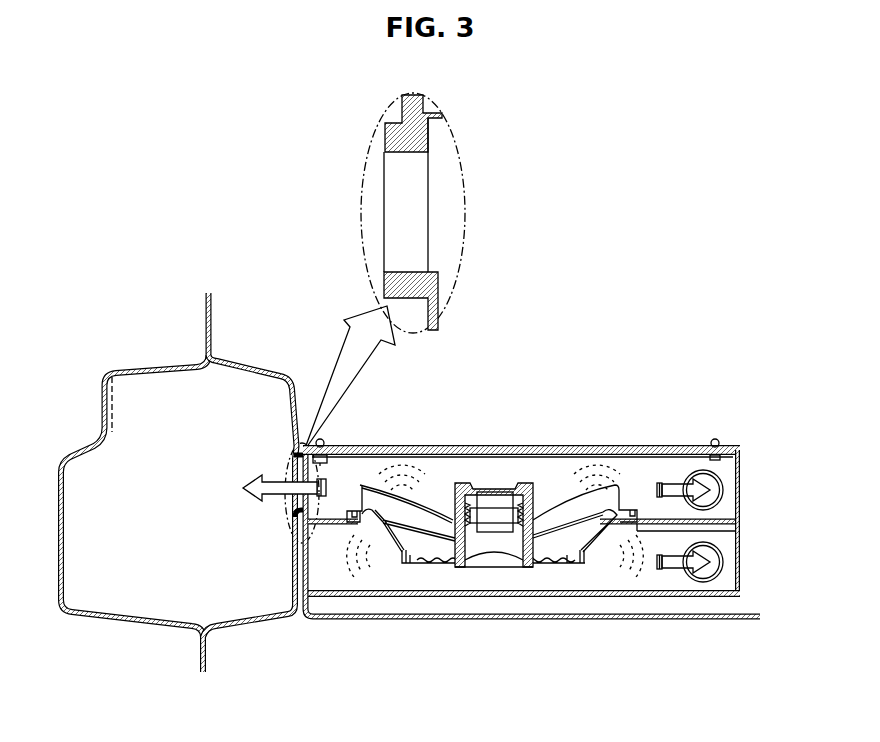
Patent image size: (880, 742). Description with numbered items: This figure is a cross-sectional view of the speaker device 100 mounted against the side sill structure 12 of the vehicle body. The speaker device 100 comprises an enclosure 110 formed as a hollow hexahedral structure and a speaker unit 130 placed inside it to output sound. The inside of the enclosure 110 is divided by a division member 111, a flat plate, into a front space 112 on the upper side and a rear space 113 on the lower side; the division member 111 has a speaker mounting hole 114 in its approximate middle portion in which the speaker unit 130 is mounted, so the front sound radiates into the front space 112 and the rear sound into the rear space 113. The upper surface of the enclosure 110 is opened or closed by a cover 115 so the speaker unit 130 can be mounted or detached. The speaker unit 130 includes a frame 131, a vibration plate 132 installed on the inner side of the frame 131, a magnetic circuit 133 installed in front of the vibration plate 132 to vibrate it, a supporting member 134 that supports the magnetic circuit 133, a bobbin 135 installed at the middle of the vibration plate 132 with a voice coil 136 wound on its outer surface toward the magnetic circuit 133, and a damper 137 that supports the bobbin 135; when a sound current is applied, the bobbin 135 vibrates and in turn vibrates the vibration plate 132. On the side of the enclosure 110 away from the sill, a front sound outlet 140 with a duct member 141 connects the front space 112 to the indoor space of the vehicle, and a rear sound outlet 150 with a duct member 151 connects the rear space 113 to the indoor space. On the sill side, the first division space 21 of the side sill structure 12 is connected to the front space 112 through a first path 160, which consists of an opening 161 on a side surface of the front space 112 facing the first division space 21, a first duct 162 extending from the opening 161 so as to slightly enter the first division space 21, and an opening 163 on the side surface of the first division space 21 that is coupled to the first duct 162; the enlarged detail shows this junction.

The side sill structure 12 is at (142, 369).
The first division space 21 is at (95, 478).
The speaker device 100 is at (602, 376).
The enclosure 110 is at (740, 468).
The division member 111 is at (718, 522).
The front space 112 is at (633, 470).
The rear space 113 is at (660, 586).
The speaker mounting hole 114 is at (368, 566).
The cover 115 is at (680, 445).
The speaker unit 130 is at (492, 533).
The frame 131 is at (406, 566).
The vibration plate 132 is at (553, 566).
The magnetic circuit 133 is at (492, 488).
The supporting member 134 is at (380, 485).
The bobbin 135 is at (527, 567).
The voice coil 136 is at (533, 500).
The damper 137 is at (447, 567).
The front sound outlet 140 is at (723, 467).
The duct member 141 is at (723, 495).
The rear sound outlet 150 is at (729, 579).
The duct member 151 is at (723, 560).
The first path 160 is at (378, 232).
The opening 161 is at (428, 265).
The first duct 162 is at (385, 280).
The opening 163 is at (385, 158).